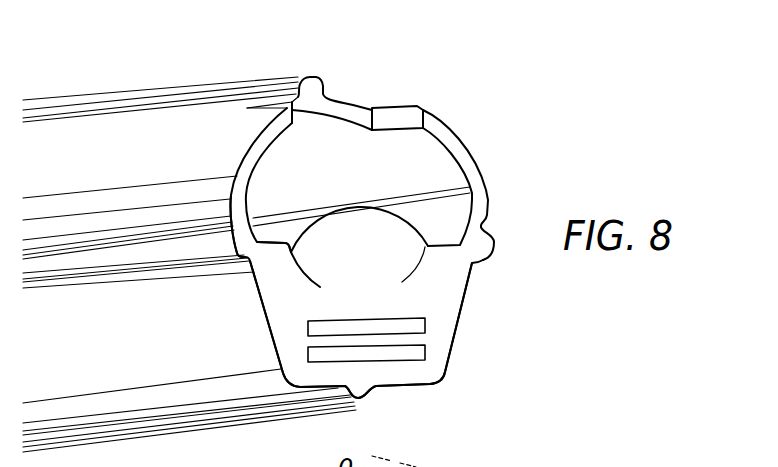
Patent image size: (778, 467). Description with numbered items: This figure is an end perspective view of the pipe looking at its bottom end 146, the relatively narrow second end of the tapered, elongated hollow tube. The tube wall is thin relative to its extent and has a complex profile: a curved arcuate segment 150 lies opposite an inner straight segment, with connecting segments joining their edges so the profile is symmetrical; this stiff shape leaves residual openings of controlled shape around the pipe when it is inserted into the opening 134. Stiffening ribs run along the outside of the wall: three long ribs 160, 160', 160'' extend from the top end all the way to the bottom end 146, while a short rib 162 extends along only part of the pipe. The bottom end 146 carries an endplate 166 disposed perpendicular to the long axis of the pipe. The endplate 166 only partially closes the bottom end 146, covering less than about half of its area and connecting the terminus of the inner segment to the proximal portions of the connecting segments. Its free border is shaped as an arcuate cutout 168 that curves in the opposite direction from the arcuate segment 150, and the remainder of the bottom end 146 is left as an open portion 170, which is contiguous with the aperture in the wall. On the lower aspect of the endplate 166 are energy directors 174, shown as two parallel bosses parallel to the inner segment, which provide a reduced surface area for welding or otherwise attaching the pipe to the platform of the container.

The arcuate segment 150 is at (453, 142).
The short rib 162 is at (305, 82).
The open portion 170 is at (373, 170).
The arcuate cutout 168 is at (352, 294).
The bottom end 146 is at (452, 288).
The long rib 160 is at (559, 271).
The long rib 160' is at (167, 201).
The long rib 160'' is at (444, 419).
The endplate 166 is at (302, 270).
The energy director 174 is at (323, 353).
The opening 134 is at (561, 461).